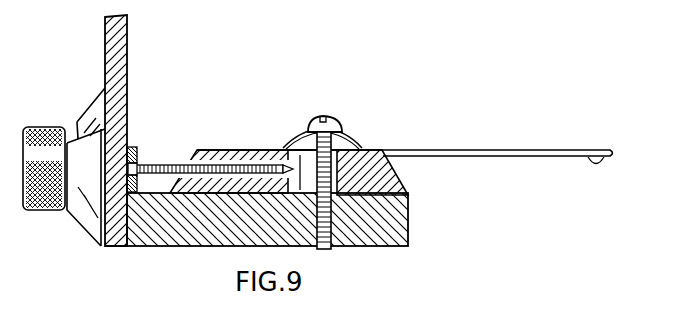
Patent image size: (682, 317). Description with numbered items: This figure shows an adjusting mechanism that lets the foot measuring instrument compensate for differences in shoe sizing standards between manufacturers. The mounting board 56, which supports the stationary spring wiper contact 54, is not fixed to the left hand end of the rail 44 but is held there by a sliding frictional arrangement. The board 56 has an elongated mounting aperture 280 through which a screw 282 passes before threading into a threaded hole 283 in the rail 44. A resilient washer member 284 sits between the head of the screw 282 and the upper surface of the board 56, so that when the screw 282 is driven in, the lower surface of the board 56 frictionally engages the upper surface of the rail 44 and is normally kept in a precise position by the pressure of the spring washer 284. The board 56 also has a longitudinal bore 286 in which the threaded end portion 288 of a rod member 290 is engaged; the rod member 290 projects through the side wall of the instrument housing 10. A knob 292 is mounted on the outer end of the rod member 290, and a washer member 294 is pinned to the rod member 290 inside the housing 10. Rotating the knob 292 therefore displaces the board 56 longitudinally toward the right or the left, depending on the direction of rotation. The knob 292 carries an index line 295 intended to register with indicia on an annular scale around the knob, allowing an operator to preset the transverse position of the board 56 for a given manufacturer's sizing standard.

The instrument housing 10 is at (103, 50).
The rail 44 is at (409, 232).
The stationary spring wiper contact 54 is at (600, 167).
The mounting board 56 is at (261, 149).
The elongated mounting aperture 280 is at (297, 128).
The screw 282 is at (334, 117).
The threaded hole 283 is at (326, 247).
The resilient washer member 284 is at (356, 138).
The longitudinal bore 286 is at (240, 149).
The threaded end portion 288 is at (232, 149).
The rod member 290 is at (158, 161).
The knob 292 is at (50, 210).
The washer member 294 is at (143, 157).
The index line 295 is at (77, 127).